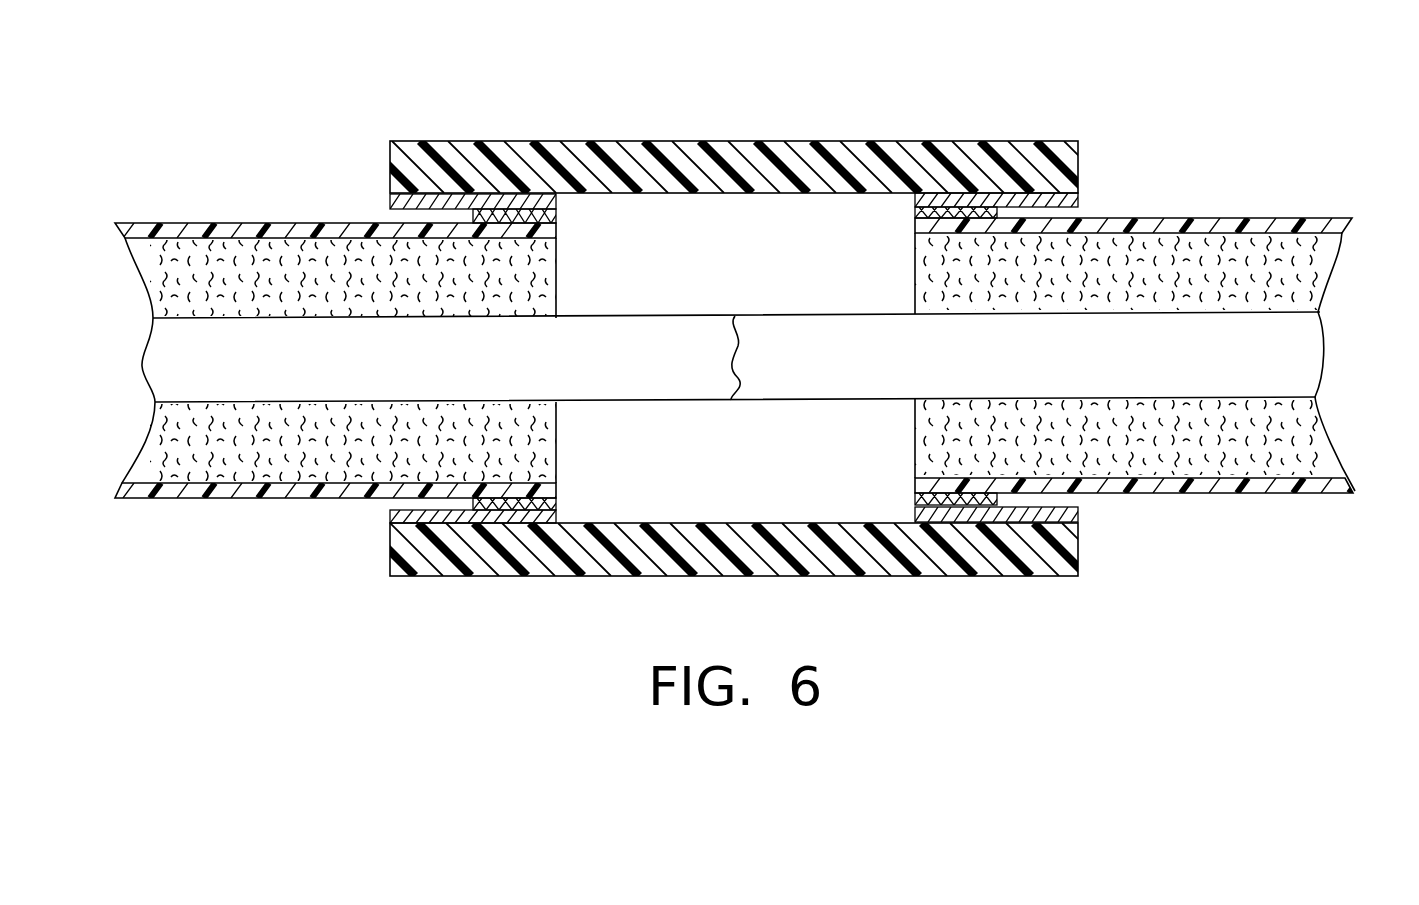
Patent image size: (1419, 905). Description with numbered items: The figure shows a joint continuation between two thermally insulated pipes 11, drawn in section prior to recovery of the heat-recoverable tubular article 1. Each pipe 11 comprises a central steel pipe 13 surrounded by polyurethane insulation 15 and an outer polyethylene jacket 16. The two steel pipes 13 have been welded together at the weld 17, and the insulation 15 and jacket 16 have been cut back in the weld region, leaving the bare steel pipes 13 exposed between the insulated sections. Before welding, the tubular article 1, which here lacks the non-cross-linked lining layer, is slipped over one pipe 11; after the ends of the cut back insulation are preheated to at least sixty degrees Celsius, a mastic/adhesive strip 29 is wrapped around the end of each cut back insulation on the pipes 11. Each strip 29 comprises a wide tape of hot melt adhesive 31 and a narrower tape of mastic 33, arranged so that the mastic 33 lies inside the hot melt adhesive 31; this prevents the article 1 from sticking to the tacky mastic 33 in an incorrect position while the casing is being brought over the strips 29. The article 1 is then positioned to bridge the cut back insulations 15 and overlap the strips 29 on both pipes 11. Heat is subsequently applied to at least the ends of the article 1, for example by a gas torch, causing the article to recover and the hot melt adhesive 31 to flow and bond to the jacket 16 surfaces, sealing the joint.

The tubular article 1 is at (843, 142).
The thermally insulated pipe 11 is at (749, 366).
The central steel pipe 13 is at (366, 374).
The polyurethane insulation 15 is at (145, 282).
The outer polyethylene jacket 16 is at (150, 225).
The weld 17 is at (727, 388).
The mastic/adhesive strip 29 is at (828, 318).
The hot melt adhesive 31 is at (1078, 200).
The mastic 33 is at (997, 212).